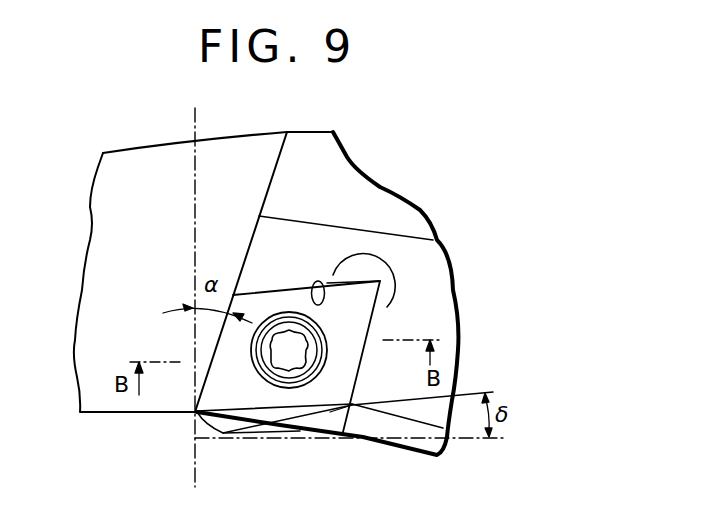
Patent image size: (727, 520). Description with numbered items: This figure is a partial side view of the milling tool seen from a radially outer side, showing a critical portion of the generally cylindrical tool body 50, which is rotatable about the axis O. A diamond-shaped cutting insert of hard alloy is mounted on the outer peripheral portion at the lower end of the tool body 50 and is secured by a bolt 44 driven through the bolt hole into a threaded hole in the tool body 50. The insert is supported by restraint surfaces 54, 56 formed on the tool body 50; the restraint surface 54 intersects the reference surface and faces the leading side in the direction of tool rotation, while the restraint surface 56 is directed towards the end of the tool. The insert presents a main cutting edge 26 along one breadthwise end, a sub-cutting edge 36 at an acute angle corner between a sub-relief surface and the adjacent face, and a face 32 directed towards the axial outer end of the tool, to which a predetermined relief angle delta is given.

The axis O is at (193, 131).
The tool body 50 is at (350, 186).
The main cutting edge 26 is at (203, 382).
The sub-cutting edge 36 is at (200, 427).
The face 32 is at (268, 431).
The bolt 44 is at (300, 331).
The restraint surface 56 is at (315, 281).
The restraint surface 54 is at (352, 377).